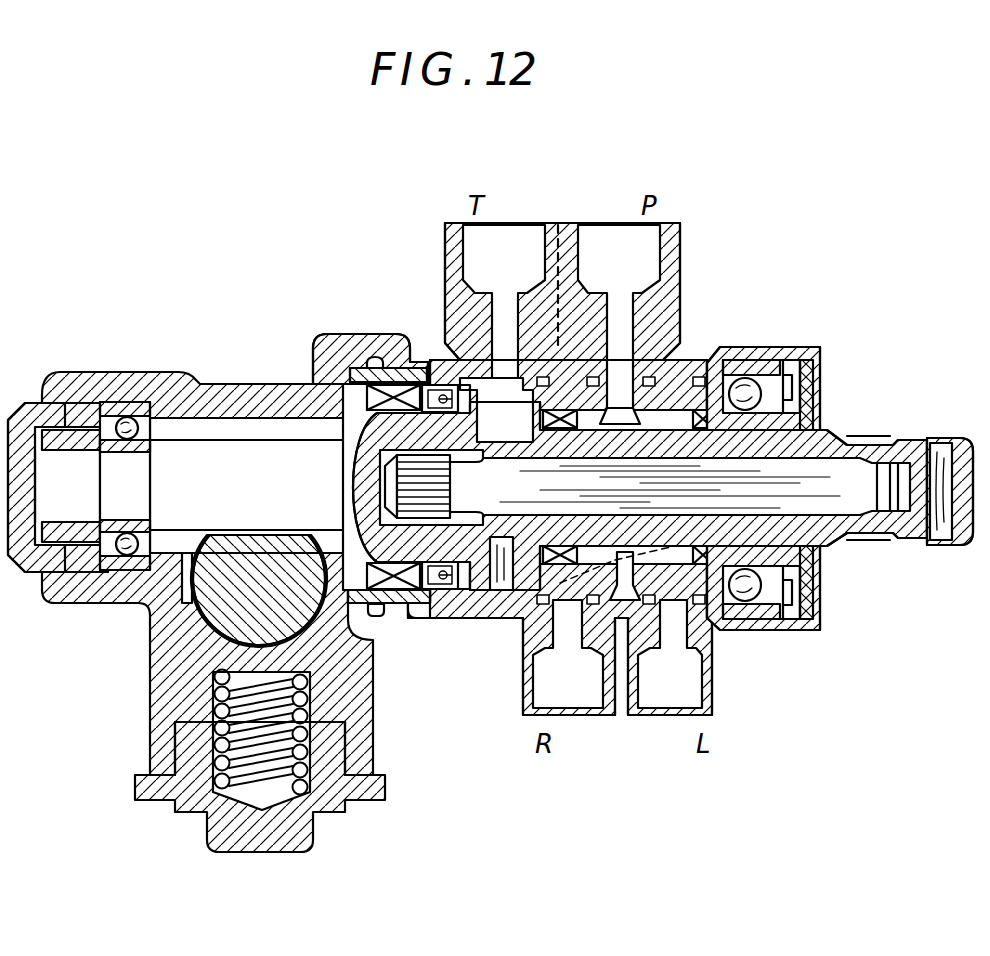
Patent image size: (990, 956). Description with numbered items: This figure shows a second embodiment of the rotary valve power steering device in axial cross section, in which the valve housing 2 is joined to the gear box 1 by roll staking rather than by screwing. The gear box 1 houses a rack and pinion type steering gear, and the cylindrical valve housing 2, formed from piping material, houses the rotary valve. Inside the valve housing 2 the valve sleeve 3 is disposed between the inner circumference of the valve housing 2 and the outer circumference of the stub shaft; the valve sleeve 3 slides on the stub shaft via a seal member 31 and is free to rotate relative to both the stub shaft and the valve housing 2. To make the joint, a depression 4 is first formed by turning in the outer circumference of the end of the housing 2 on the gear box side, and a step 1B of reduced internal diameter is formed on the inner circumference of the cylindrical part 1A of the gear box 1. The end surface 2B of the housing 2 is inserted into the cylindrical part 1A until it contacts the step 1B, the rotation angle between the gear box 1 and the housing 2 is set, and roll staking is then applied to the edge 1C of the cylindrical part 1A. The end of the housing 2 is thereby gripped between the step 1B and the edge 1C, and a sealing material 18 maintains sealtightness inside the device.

The gear box 1 is at (80, 372).
The cylindrical part 1A is at (367, 334).
The step 1B is at (353, 370).
The edge 1C is at (424, 366).
The valve housing 2 is at (793, 347).
The end surface 2B is at (308, 370).
The valve sleeve 3 is at (683, 383).
The depression 4 is at (423, 618).
The sealing material 18 is at (376, 616).
The seal member 31 is at (720, 600).